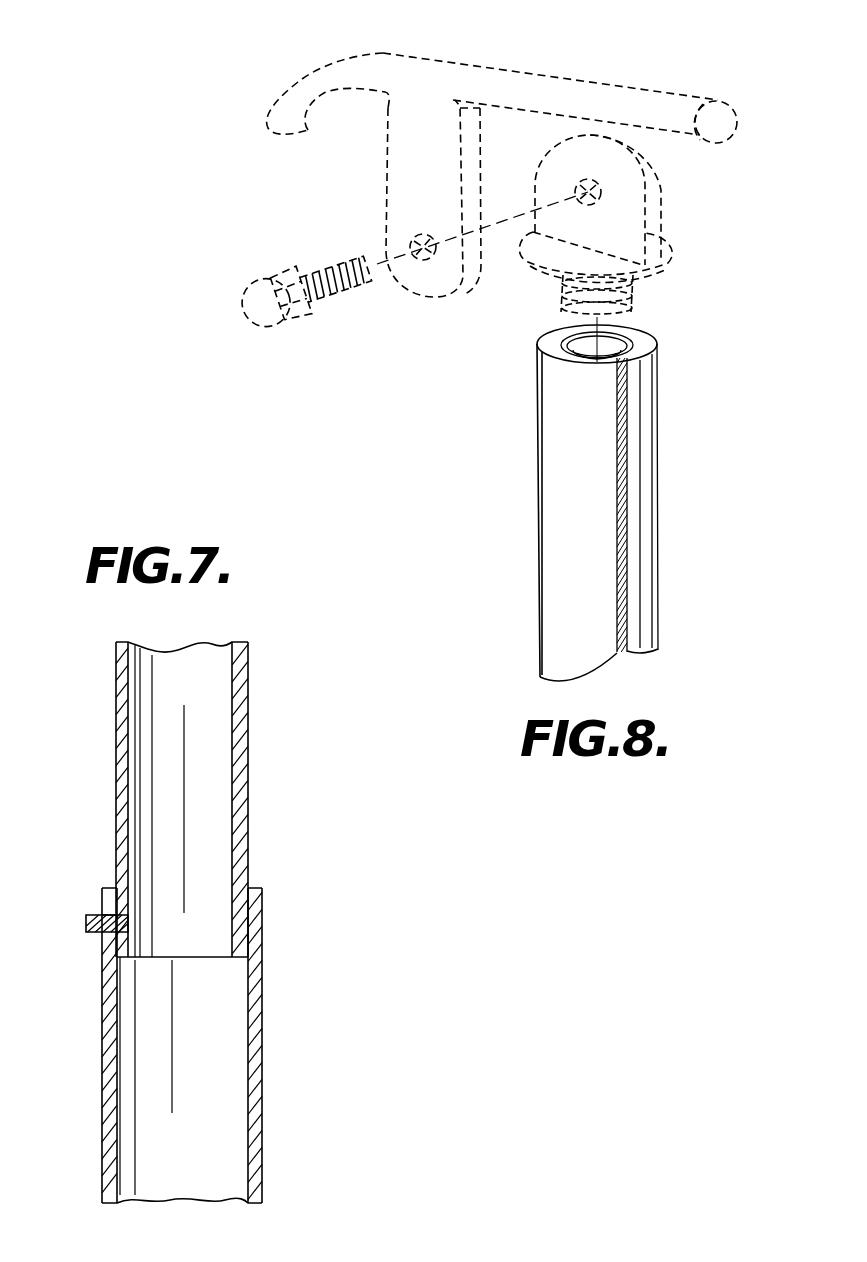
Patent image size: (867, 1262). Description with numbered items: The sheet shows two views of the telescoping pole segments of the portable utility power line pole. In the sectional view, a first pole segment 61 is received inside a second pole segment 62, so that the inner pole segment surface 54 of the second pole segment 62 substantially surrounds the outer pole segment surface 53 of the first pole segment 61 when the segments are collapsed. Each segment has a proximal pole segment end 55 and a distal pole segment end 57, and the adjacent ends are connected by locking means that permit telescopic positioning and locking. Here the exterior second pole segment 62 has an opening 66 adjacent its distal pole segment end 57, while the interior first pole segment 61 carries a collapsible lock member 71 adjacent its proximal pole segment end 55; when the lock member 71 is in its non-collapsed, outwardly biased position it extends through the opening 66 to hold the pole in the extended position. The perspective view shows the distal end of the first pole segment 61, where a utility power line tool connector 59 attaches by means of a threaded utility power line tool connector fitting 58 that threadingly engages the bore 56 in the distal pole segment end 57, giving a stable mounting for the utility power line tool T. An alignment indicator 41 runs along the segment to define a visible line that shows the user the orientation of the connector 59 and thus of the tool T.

In FIG. 8, the alignment indicator 41 is at (621, 621).
In FIG. 7, the outer pole segment surface 53 is at (142, 738).
In FIG. 7, the inner pole segment surface 54 is at (250, 1137).
In FIG. 7, the proximal pole segment end 55 is at (191, 972).
In FIG. 8, the distal pole segment end bore 56 is at (558, 348).
In FIG. 8, the distal pole segment end 57 is at (587, 503).
In FIG. 7, the distal pole segment end 57 is at (220, 922).
In FIG. 8, the utility power line tool connector fitting 58 is at (630, 300).
In FIG. 8, the utility power line tool connector 59 is at (657, 208).
In FIG. 8, the first pole segment 61 is at (675, 500).
In FIG. 7, the first pole segment 61 is at (264, 760).
In FIG. 7, the second pole segment 62 is at (281, 1052).
In FIG. 7, the opening 66 is at (102, 933).
In FIG. 7, the collapsible lock member 71 is at (87, 917).
In FIG. 8, the utility power line tool T is at (457, 58).